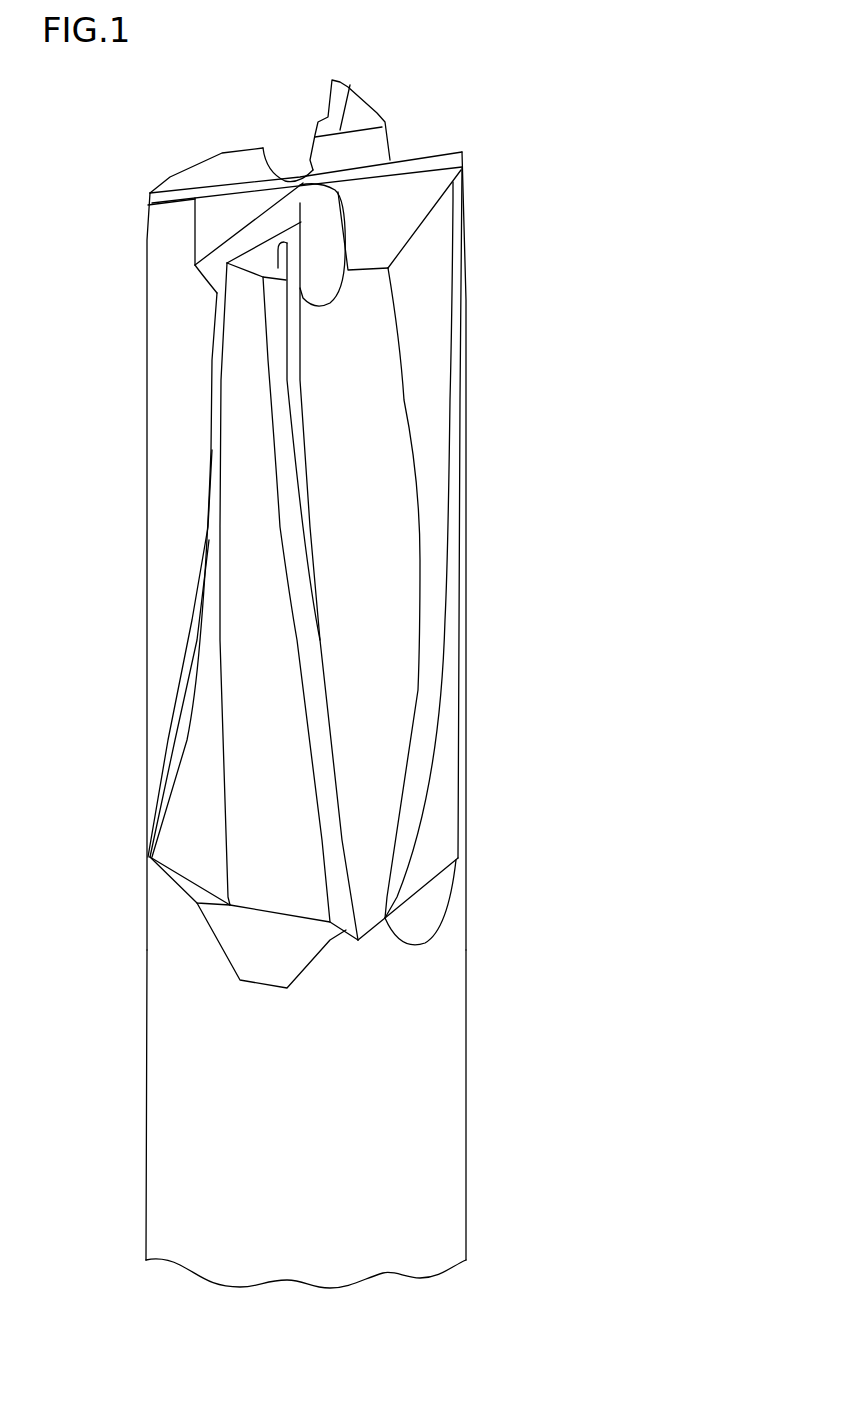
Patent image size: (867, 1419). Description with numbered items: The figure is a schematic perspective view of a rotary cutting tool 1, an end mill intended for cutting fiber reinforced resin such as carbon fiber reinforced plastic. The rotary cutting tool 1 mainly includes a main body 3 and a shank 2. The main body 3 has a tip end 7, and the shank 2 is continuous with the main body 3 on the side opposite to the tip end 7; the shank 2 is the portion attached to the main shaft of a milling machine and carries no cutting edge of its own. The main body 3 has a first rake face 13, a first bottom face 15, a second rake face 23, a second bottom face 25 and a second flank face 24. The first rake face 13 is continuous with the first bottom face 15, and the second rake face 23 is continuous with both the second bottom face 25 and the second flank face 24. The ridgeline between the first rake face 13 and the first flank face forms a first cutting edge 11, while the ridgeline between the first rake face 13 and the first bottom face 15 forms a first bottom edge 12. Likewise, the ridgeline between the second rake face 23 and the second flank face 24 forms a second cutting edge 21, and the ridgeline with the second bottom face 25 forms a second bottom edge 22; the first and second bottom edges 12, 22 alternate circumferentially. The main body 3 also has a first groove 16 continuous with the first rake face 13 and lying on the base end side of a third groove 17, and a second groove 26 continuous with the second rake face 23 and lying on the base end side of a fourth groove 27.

The rotary cutting tool 1 is at (506, 108).
The shank 2 is at (397, 1108).
The main body 3 is at (267, 660).
The tip end 7 is at (463, 150).
The first cutting edge 11 is at (148, 217).
The first bottom edge 12 is at (178, 196).
The first rake face 13 is at (175, 245).
The first bottom face 15 is at (223, 190).
The first groove 16 is at (173, 672).
The third groove 17 is at (213, 268).
The second cutting edge 21 is at (287, 324).
The second bottom edge 22 is at (300, 256).
The second rake face 23 is at (300, 276).
The second flank face 24 is at (277, 313).
The second bottom face 25 is at (343, 95).
The second groove 26 is at (365, 433).
The fourth groove 27 is at (325, 233).